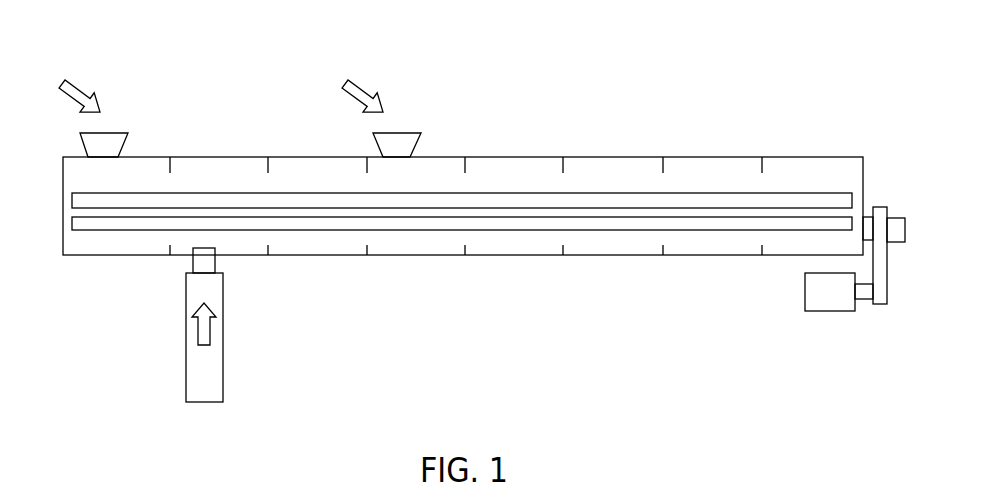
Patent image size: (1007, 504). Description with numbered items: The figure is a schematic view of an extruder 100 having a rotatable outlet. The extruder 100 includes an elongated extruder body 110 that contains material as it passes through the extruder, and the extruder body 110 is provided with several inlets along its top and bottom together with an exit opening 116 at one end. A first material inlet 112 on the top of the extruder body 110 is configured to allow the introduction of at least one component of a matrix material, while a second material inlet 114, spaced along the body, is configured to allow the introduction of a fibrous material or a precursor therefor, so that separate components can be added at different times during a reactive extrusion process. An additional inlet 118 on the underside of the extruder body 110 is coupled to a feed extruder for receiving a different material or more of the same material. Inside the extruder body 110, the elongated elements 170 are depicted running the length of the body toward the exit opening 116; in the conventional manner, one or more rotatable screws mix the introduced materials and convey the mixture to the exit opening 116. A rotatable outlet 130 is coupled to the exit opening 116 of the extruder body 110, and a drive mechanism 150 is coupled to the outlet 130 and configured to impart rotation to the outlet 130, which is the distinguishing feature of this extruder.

The extruder 100 is at (757, 94).
The extruder body 110 is at (513, 165).
The first material inlet 112 is at (116, 122).
The second material inlet 114 is at (412, 118).
The exit opening 116 is at (855, 244).
The additional inlet 118 is at (170, 266).
The rotatable outlet 130 is at (899, 222).
The drive mechanism 150 is at (850, 340).
The heating elements 170 is at (421, 228).